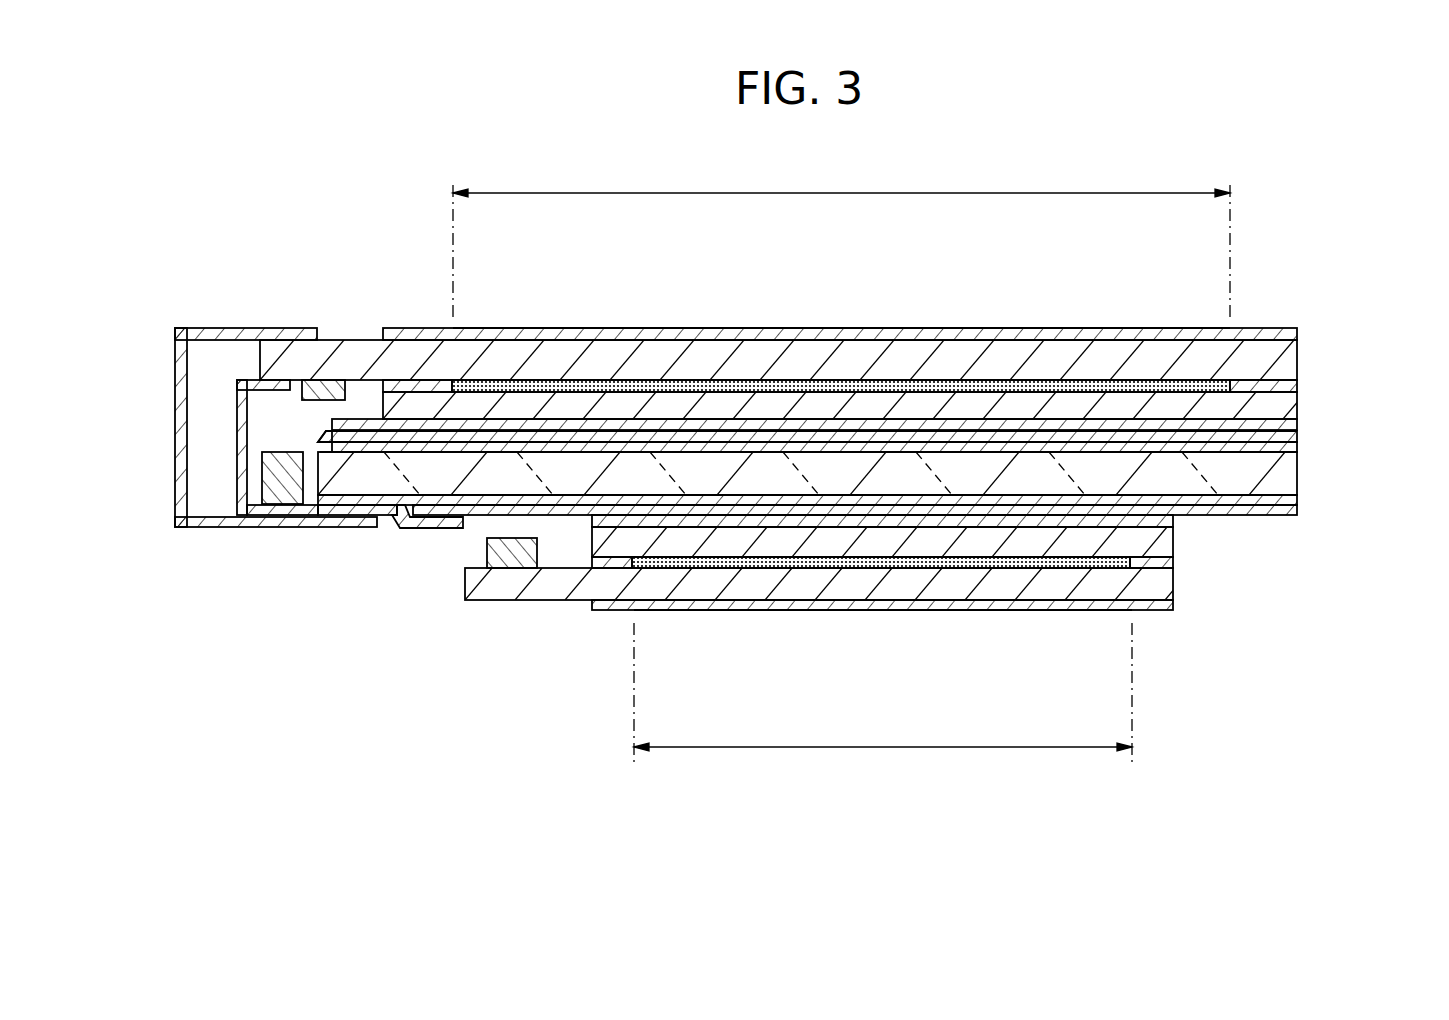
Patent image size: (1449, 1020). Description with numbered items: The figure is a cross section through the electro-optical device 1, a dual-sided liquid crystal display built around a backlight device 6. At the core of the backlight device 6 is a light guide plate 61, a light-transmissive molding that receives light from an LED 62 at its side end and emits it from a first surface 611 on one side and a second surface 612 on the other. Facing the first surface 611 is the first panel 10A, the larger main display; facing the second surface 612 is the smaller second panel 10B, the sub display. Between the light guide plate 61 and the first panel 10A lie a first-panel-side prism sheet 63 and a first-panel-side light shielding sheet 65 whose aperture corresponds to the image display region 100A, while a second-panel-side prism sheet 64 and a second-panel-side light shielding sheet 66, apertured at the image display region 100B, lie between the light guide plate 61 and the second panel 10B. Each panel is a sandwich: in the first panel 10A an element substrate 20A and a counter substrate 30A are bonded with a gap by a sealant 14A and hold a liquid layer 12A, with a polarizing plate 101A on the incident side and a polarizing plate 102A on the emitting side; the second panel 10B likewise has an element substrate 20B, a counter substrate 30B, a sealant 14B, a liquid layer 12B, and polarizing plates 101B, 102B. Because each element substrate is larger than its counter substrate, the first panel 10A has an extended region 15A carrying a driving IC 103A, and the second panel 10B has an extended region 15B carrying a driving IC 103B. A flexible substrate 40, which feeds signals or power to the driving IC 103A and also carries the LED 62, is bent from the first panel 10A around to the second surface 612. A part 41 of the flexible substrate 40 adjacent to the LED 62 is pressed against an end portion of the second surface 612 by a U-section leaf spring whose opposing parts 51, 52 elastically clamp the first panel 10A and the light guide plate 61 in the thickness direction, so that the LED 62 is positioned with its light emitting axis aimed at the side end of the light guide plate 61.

The electro-optical device 1 is at (280, 192).
The backlight device 6 is at (150, 548).
The first panel 10A is at (854, 348).
The second panel 10B is at (895, 609).
The liquid layer 12A is at (1060, 385).
The liquid layer 12B is at (692, 562).
The sealant 14A is at (418, 382).
The sealant 14B is at (587, 572).
The extended region 15A is at (360, 383).
The extended region 15B is at (550, 572).
The element substrate 20A is at (1290, 365).
The element substrate 20B is at (1160, 578).
The counter substrate 30A is at (1293, 405).
The counter substrate 30B is at (1160, 552).
The flexible substrate 40 is at (276, 427).
The part of the flexible substrate 41 is at (297, 508).
The opposing part 51 is at (268, 330).
The opposing part 52 is at (238, 527).
The light guide plate 61 is at (1283, 472).
The first surface 611 is at (650, 432).
The second surface 612 is at (725, 492).
The LED 62 is at (270, 472).
The first-panel-side prism sheet 63 is at (372, 505).
The second-panel-side prism sheet 64 is at (457, 500).
The first-panel-side light shielding sheet 65 is at (355, 417).
The second-panel-side light shielding sheet 66 is at (345, 515).
The image display region 100A is at (935, 190).
The image display region 100B is at (858, 745).
The polarizing plate 101A is at (1297, 430).
The polarizing plate 101B is at (973, 517).
The polarizing plate 102A is at (932, 333).
The polarizing plate 102B is at (1040, 605).
The driving IC 103A is at (327, 382).
The driving IC 103B is at (505, 560).